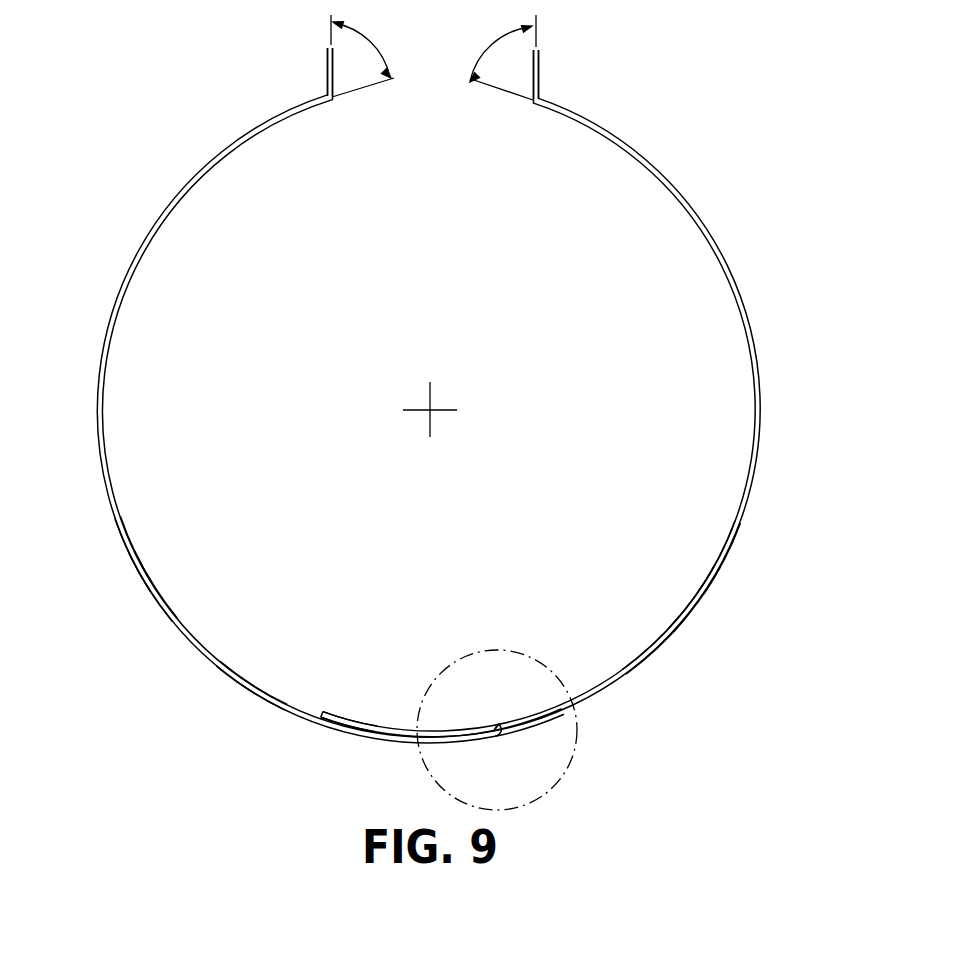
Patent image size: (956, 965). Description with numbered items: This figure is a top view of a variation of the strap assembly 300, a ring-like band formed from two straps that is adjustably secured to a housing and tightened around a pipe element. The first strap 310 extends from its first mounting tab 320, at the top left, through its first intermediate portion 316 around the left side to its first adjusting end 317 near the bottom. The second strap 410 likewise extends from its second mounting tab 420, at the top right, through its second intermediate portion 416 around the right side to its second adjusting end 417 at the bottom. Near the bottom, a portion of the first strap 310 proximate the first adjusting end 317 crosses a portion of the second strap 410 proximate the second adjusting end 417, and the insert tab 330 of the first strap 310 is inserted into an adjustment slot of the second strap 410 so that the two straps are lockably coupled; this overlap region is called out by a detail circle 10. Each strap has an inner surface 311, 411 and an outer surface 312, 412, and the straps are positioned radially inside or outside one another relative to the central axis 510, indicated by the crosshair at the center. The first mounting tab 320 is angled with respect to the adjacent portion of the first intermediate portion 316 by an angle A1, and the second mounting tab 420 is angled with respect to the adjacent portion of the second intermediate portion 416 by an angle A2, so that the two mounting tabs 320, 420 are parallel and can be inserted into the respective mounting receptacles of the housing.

The strap assembly 300 is at (443, 379).
The first strap 310 is at (309, 379).
The inner surface 311 is at (157, 583).
The outer surface 312 is at (247, 693).
The first intermediate portion 316 is at (130, 556).
The first adjusting end 317 is at (512, 723).
The first mounting tab 320 is at (327, 78).
The insert tab 330 is at (503, 721).
The second strap 410 is at (552, 376).
The inner surface 411 is at (693, 596).
The outer surface 412 is at (662, 654).
The second intermediate portion 416 is at (725, 560).
The second adjusting end 417 is at (321, 722).
The second mounting tab 420 is at (540, 76).
The axis 510 is at (432, 408).
The detail region 10 is at (577, 755).
The angle A1 is at (372, 44).
The angle A2 is at (492, 56).